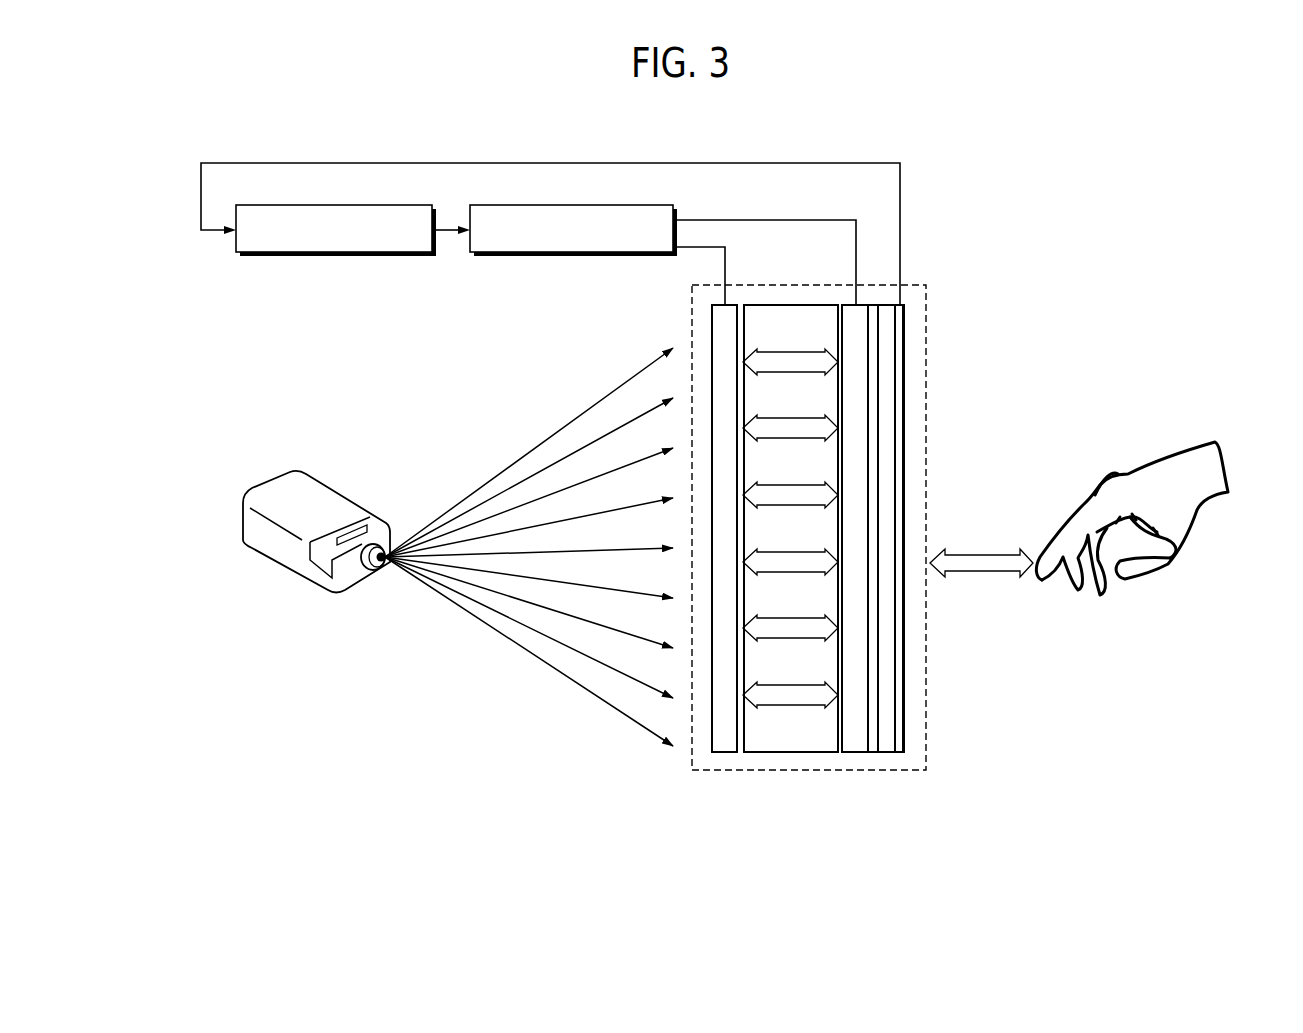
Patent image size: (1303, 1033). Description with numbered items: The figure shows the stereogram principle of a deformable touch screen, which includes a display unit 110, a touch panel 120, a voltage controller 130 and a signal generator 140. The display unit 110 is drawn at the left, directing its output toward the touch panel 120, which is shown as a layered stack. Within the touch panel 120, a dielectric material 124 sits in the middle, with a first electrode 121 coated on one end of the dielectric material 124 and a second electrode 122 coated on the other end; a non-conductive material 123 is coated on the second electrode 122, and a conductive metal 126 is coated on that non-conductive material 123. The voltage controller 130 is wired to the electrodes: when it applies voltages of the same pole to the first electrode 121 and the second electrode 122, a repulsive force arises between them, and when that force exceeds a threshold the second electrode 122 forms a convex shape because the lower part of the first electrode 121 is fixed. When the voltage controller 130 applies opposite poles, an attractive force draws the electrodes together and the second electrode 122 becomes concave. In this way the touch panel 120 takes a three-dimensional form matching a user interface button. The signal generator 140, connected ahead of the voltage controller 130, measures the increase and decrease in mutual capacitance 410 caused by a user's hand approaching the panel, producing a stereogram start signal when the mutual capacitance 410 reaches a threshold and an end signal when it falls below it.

The display unit 110 is at (273, 559).
The touch panel 120 is at (926, 345).
The first electrode 121 is at (727, 752).
The second electrode 122 is at (858, 752).
The non-conductive material 123 is at (883, 696).
The dielectric material 124 is at (808, 395).
The conductive metal 126 is at (903, 643).
The voltage controller 130 is at (570, 256).
The signal generator 140 is at (327, 256).
The mutual capacitance 410 is at (985, 555).